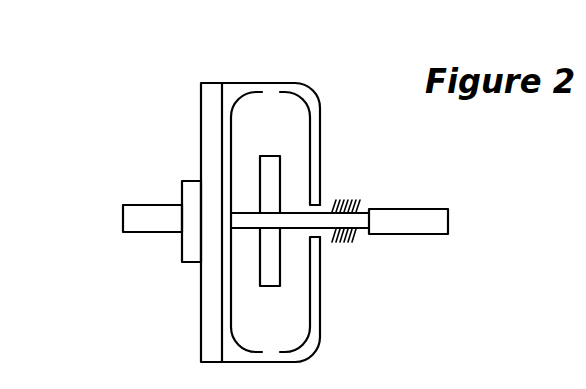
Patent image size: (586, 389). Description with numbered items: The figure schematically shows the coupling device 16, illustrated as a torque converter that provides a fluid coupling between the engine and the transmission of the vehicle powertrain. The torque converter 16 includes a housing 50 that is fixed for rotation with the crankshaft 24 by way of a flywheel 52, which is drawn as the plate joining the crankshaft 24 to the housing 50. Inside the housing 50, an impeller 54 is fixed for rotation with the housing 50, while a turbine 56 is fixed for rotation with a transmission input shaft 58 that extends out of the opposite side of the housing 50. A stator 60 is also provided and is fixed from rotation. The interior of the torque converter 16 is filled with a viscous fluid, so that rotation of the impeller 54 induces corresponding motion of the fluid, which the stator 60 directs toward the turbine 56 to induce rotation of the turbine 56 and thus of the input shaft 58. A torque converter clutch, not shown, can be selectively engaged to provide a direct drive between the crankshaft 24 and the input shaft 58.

The coupling device 16 is at (394, 277).
The crankshaft 24 is at (122, 208).
The housing 50 is at (272, 83).
The flywheel 52 is at (200, 89).
The impeller 54 is at (310, 151).
The turbine 56 is at (231, 320).
The transmission input shaft 58 is at (390, 207).
The stator 60 is at (270, 287).